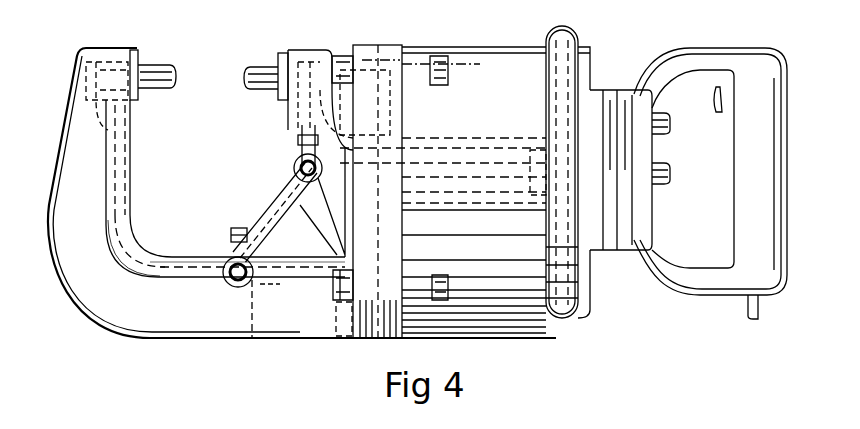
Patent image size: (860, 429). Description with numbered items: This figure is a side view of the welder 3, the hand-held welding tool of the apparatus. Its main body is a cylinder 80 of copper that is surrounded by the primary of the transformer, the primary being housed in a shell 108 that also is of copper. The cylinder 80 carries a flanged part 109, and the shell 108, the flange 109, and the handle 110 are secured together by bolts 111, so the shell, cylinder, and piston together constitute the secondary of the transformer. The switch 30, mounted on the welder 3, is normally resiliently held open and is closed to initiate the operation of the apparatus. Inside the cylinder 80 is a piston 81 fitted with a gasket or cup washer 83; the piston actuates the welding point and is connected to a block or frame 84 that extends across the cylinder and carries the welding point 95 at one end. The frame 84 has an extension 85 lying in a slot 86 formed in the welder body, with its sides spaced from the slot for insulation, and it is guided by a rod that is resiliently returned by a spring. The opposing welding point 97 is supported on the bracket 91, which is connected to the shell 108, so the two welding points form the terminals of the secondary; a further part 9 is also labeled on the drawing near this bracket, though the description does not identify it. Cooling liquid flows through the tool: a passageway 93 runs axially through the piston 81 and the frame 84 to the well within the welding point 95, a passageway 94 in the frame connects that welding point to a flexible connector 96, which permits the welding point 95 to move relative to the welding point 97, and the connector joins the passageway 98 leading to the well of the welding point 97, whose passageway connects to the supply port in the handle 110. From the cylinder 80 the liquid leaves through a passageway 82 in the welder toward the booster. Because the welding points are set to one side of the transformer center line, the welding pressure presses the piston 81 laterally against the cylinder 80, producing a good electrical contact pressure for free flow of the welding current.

The welder 3 is at (332, 28).
The clamp bar 9 is at (282, 272).
The switch 30 is at (716, 100).
The cylinder 80 is at (480, 142).
The piston 81 is at (452, 142).
The passageway 82 is at (640, 147).
The gasket or cup washer 83 is at (540, 152).
The block or frame 84 is at (318, 112).
The extension 85 is at (344, 318).
The slot 86 is at (288, 312).
The welding point-supporting bracket 91 is at (140, 288).
The passageway 93 is at (388, 142).
The passageway 94 is at (290, 112).
The welding point 95 is at (262, 80).
The flexible connector 96 is at (272, 216).
The welding point 97 is at (161, 76).
The passageway 98 is at (118, 179).
The shell 108 is at (458, 88).
The flanged part 109 is at (601, 100).
The handle 110 is at (691, 59).
The bolts 111 is at (668, 181).